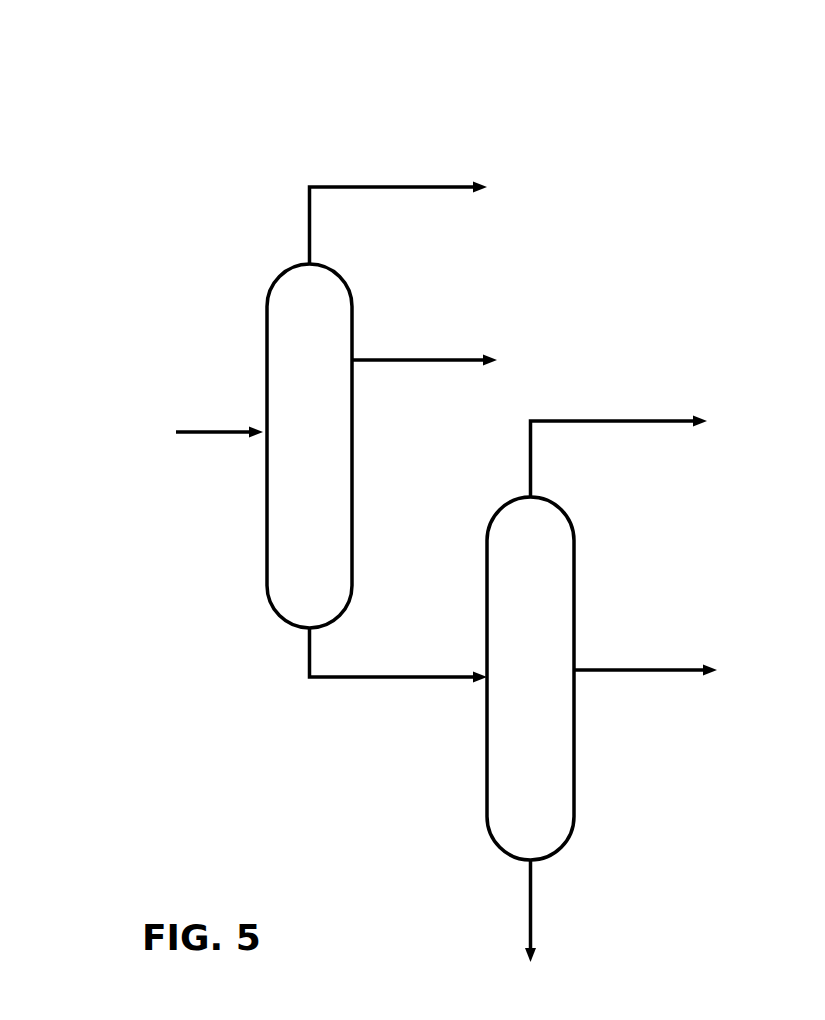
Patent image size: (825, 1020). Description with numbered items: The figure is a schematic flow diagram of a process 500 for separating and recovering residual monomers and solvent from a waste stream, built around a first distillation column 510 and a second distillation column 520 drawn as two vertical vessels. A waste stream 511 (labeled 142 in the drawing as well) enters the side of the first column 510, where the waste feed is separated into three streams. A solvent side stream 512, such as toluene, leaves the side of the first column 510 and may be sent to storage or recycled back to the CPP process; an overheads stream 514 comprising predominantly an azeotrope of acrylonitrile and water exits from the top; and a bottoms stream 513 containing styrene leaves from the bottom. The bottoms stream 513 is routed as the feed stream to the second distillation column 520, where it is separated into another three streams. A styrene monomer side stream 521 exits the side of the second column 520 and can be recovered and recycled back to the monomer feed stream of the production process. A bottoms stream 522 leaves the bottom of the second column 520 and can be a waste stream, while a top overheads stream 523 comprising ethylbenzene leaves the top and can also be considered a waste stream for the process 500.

The process 500 is at (612, 114).
The first distillation column 510 is at (332, 446).
The waste stream 511 is at (193, 388).
The feed stream from upstream unit 142 is at (208, 432).
The solvent side stream 512 is at (445, 360).
The bottoms stream 513 is at (373, 679).
The overheads stream 514 is at (385, 187).
The second distillation column 520 is at (553, 678).
The styrene monomer side stream 521 is at (638, 670).
The bottoms stream 522 is at (530, 907).
The top overheads stream 523 is at (650, 421).